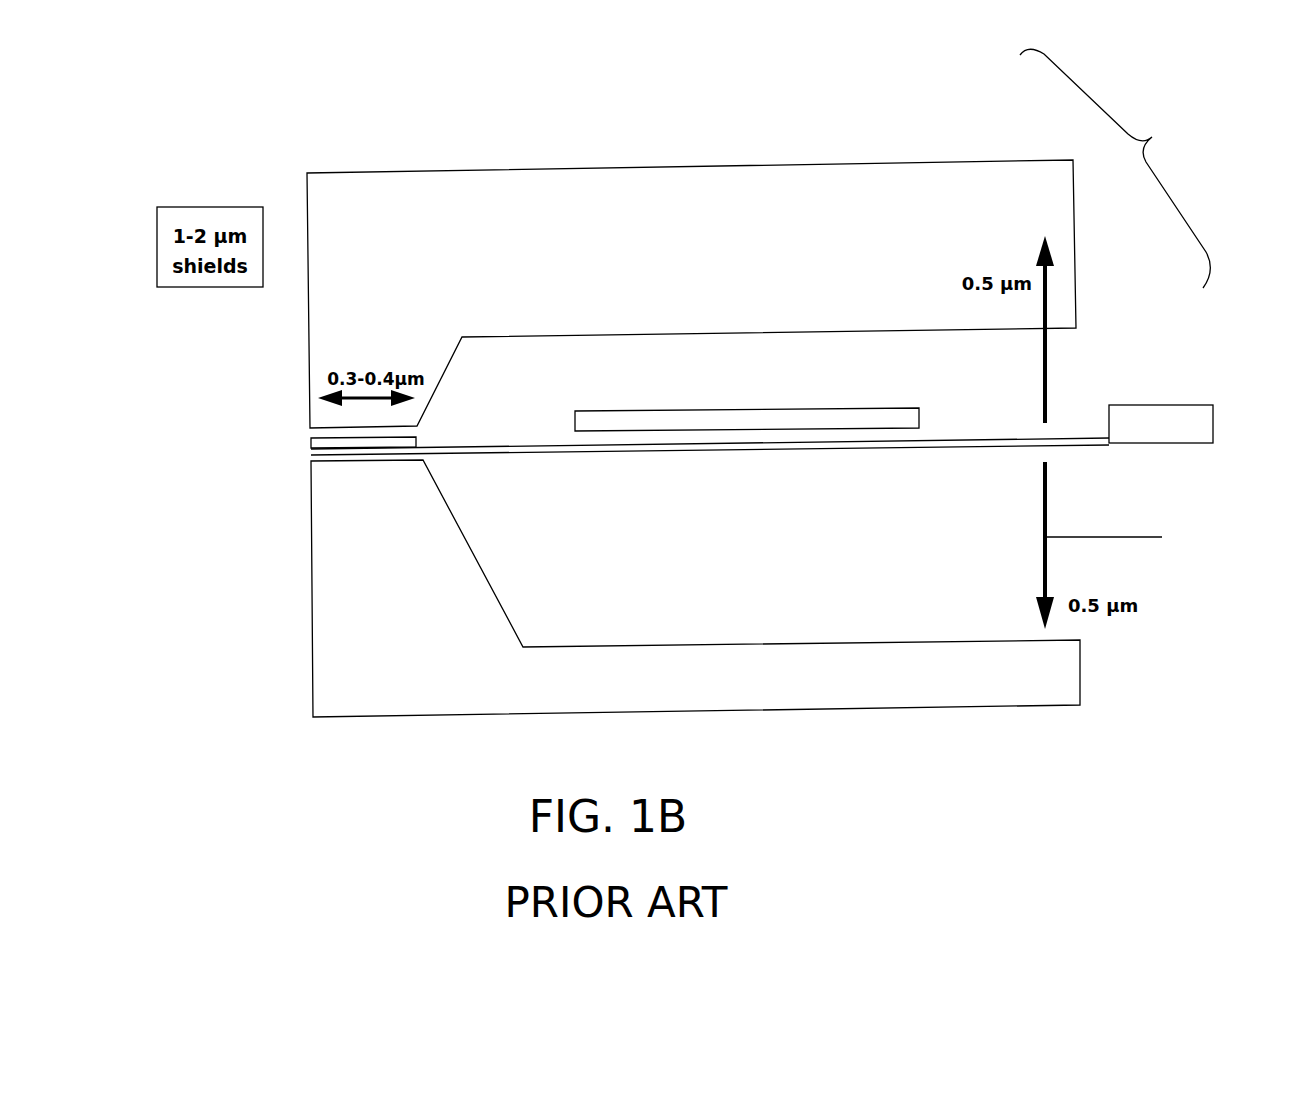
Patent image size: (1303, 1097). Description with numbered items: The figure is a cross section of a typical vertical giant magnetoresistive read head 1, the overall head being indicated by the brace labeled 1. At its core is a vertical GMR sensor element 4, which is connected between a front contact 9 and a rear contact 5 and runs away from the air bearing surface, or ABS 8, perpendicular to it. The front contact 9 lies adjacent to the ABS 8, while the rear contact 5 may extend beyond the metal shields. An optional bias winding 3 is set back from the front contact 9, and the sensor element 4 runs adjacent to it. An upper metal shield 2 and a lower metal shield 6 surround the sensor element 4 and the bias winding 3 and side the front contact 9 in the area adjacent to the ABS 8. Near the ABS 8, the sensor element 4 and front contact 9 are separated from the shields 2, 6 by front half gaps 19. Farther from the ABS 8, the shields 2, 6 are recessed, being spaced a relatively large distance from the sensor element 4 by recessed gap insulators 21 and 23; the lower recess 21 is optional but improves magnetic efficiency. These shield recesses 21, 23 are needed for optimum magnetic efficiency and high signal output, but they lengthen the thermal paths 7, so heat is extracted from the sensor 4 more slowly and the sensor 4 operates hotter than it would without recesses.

The read head 1 is at (1115, 168).
The upper metal shield 2 is at (733, 188).
The bias winding 3 is at (722, 426).
The vertical GMR sensor element 4 is at (847, 448).
The rear contact 5 is at (1213, 423).
The lower metal shield 6 is at (695, 650).
The thermal paths 7 is at (1045, 343).
The ABS 8 is at (288, 472).
The front contact 9 is at (350, 437).
The front half gaps 19 is at (310, 456).
The upper recessed gap insulator 21 is at (988, 388).
The lower recessed gap insulator 23 is at (882, 583).